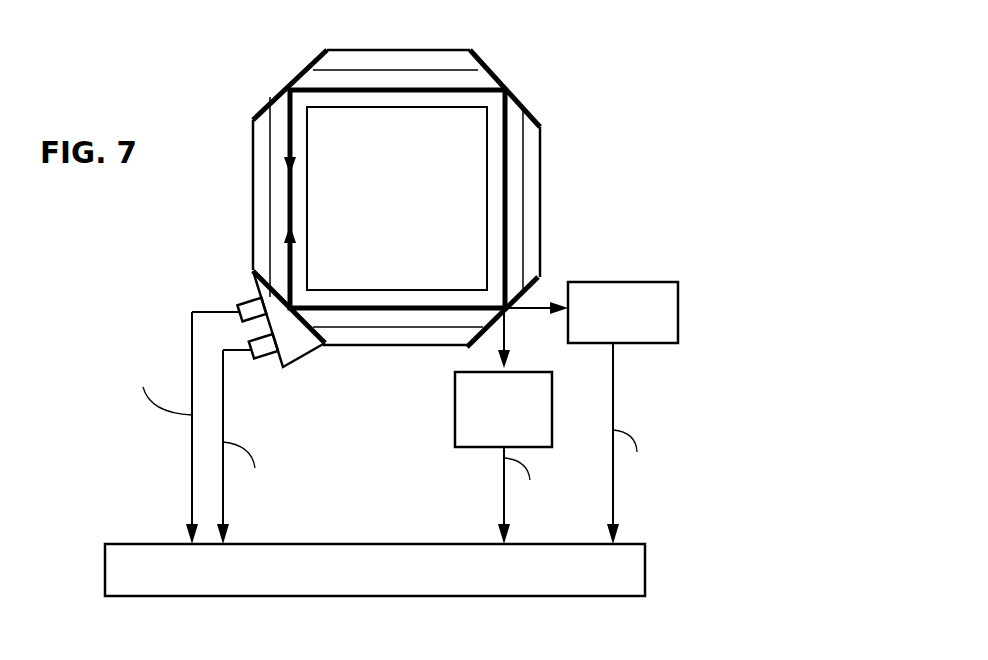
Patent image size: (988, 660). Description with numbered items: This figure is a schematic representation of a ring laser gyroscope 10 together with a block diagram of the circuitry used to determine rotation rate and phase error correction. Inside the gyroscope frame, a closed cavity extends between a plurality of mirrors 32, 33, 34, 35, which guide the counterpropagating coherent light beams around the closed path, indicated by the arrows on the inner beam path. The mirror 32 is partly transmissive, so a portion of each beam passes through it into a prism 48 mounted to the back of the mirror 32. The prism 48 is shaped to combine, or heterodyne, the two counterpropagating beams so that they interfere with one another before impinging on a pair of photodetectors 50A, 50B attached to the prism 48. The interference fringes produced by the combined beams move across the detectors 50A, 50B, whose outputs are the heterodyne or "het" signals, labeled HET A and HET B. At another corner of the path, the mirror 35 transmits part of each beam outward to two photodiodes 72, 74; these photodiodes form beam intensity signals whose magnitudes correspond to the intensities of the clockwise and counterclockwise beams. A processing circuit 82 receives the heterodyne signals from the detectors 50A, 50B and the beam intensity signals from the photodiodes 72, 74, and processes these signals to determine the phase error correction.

The ring laser gyroscope 10 is at (630, 203).
The mirror 32 is at (258, 298).
The mirror 33 is at (275, 110).
The mirror 34 is at (523, 102).
The mirror 35 is at (541, 280).
The prism 48 is at (305, 355).
The photodetector 50A is at (263, 359).
The photodetector 50B is at (238, 305).
The photodiode 72 is at (468, 447).
The photodiode 74 is at (640, 343).
The processing circuit 82 is at (645, 580).